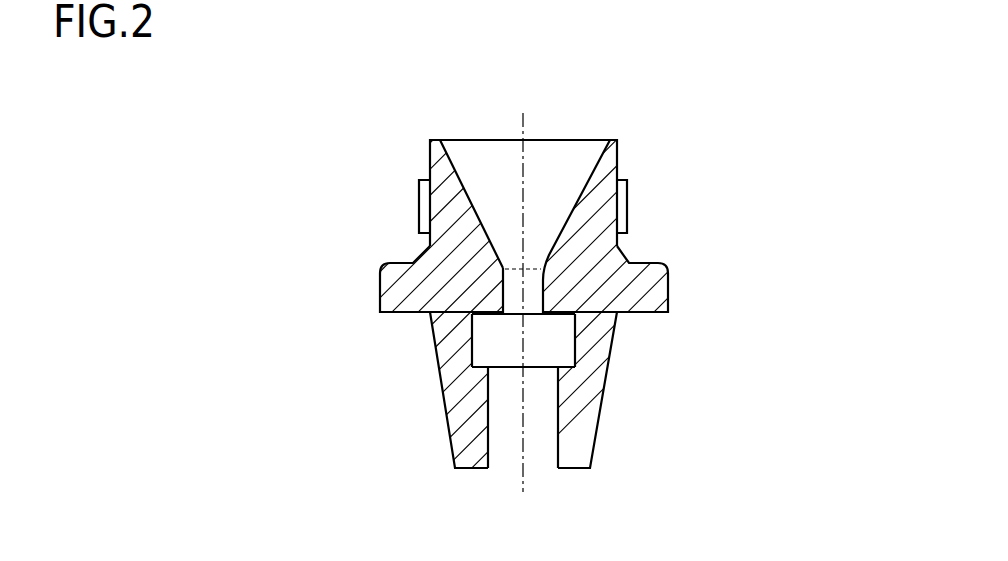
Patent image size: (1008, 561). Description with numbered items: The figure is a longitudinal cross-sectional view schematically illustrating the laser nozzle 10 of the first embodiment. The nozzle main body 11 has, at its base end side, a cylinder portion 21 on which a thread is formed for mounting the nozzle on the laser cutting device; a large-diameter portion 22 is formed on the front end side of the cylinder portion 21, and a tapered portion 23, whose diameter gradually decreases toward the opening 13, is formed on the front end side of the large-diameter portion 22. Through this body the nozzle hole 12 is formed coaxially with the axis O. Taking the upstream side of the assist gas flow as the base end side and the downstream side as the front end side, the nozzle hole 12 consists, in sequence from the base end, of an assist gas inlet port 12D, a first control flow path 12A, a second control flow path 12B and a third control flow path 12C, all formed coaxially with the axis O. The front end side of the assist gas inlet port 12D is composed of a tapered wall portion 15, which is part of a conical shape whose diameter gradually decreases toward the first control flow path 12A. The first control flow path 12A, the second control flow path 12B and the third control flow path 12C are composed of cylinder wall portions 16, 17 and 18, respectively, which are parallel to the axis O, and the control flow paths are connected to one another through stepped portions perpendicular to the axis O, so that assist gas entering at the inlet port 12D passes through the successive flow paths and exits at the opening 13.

The nozzle 10 is at (733, 162).
The nozzle main body 11 is at (598, 347).
The nozzle hole 12 is at (272, 229).
The first control flow path 12A is at (512, 277).
The second control flow path 12B is at (473, 330).
The third control flow path 12C is at (503, 398).
The assist gas inlet port 12D is at (507, 213).
The opening 13 is at (540, 468).
The tapered wall portion 15 is at (483, 201).
The cylinder wall portion 16 is at (503, 293).
The cylinder wall portion 17 is at (508, 352).
The cylinder wall portion 18 is at (492, 420).
The cylinder portion 21 is at (617, 157).
The large-diameter portion 22 is at (668, 283).
The tapered portion 23 is at (600, 412).
The axis O is at (524, 128).